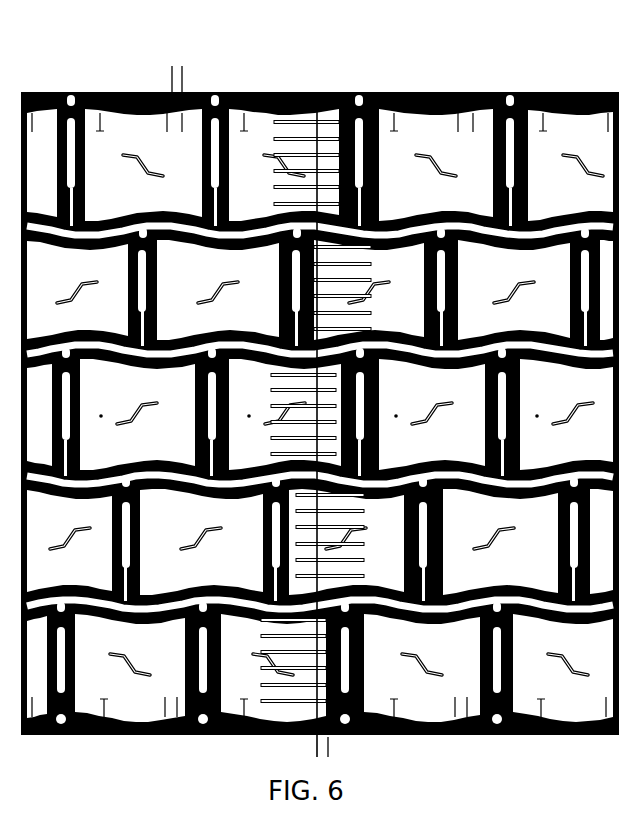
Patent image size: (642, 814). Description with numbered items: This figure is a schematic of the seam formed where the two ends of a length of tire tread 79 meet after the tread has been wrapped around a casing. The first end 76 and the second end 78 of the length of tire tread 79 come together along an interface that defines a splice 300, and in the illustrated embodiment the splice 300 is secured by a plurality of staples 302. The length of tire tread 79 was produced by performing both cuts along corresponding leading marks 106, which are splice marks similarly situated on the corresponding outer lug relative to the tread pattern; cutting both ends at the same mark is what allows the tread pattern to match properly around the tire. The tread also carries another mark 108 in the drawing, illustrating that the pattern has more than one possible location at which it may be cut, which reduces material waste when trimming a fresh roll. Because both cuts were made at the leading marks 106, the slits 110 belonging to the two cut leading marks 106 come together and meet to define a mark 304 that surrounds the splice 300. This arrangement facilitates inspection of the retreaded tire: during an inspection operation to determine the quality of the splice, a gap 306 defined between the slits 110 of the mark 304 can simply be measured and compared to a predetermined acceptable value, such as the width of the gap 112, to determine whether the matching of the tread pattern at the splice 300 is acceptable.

The first end 76 is at (290, 88).
The second end 78 is at (338, 88).
The length of tire tread 79 is at (562, 128).
The leading mark 106 is at (453, 88).
The tread block sipes 108 is at (398, 88).
The slits 110 is at (236, 92).
The gap 112 is at (186, 78).
The splice 300 is at (314, 612).
The staples 302 is at (365, 520).
The mark 304 is at (316, 88).
The gap 306 is at (292, 748).